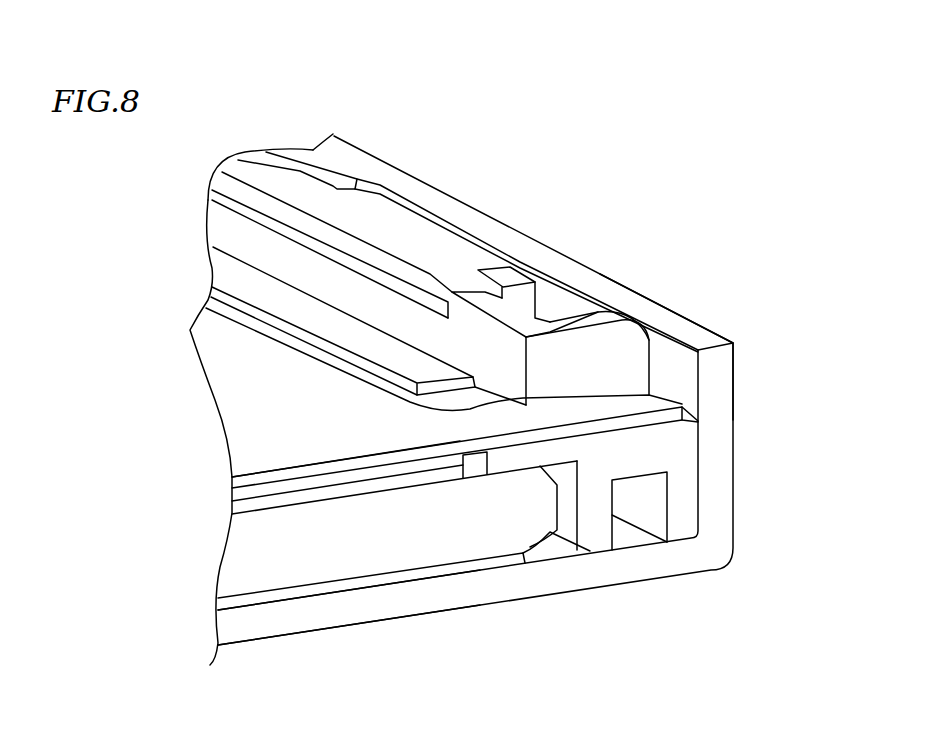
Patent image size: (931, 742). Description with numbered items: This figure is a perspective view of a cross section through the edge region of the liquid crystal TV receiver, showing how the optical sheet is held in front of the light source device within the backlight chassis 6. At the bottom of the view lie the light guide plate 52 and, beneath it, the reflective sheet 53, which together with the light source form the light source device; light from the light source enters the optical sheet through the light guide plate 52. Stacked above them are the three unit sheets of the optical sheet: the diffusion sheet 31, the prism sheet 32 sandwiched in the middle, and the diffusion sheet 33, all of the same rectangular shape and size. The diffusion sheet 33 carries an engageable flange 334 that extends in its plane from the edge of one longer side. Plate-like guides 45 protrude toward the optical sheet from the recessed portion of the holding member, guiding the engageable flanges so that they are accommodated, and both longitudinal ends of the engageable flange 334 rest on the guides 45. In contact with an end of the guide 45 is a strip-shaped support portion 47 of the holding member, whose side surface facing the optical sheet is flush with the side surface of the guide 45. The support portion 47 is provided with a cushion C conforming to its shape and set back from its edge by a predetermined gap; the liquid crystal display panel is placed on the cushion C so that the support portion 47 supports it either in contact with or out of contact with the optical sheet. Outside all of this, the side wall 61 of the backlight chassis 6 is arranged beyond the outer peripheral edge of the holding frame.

The cushion C is at (230, 272).
The support portion 47 is at (495, 402).
The side wall 61 is at (681, 328).
The engageable flange 334 is at (655, 404).
The backlight chassis 6 is at (735, 498).
The diffusion sheet 33 is at (232, 478).
The prism sheet 32 is at (232, 492).
The diffusion sheet 31 is at (232, 512).
The light guide plate 52 is at (232, 568).
The reflective sheet 53 is at (218, 607).
The guide 45 is at (498, 463).